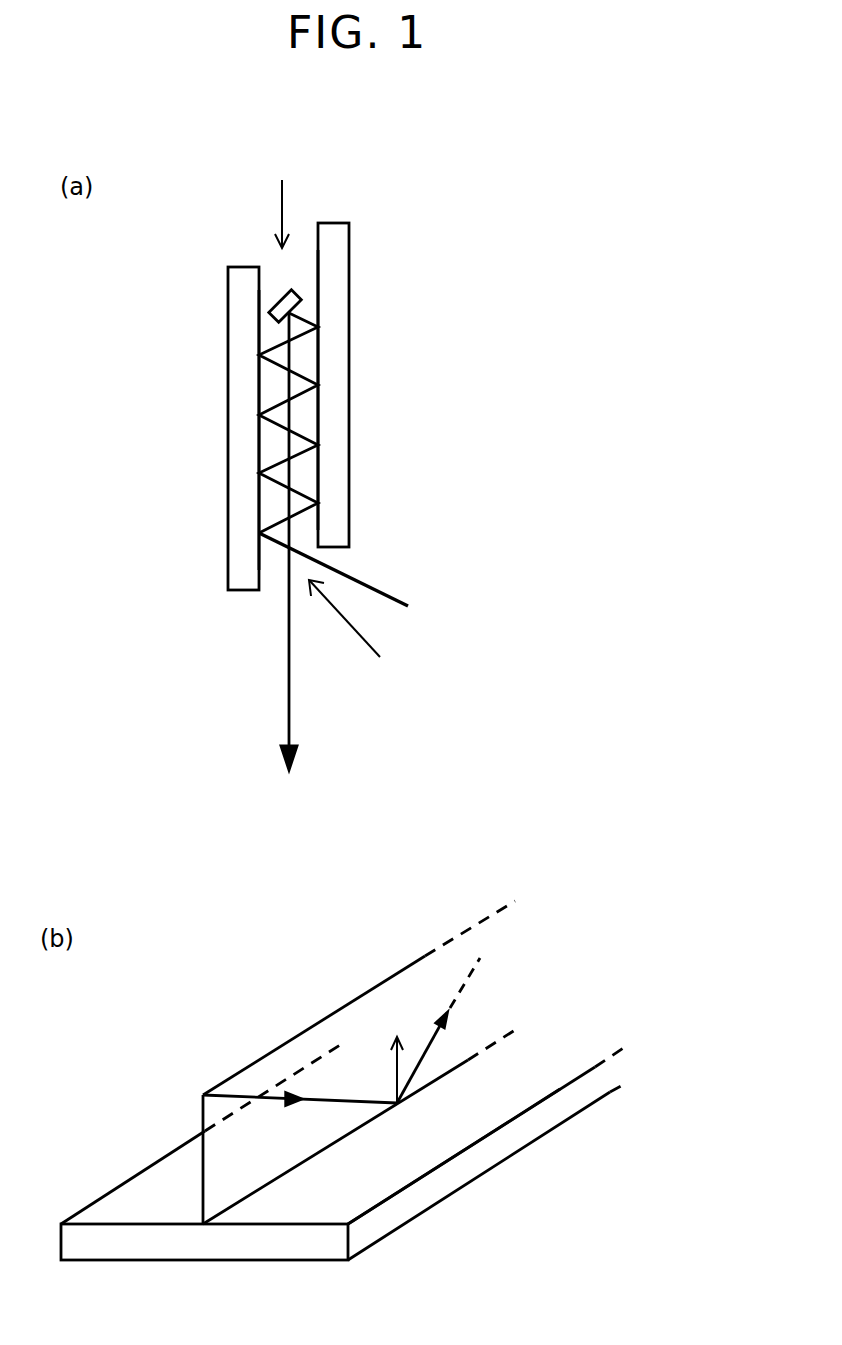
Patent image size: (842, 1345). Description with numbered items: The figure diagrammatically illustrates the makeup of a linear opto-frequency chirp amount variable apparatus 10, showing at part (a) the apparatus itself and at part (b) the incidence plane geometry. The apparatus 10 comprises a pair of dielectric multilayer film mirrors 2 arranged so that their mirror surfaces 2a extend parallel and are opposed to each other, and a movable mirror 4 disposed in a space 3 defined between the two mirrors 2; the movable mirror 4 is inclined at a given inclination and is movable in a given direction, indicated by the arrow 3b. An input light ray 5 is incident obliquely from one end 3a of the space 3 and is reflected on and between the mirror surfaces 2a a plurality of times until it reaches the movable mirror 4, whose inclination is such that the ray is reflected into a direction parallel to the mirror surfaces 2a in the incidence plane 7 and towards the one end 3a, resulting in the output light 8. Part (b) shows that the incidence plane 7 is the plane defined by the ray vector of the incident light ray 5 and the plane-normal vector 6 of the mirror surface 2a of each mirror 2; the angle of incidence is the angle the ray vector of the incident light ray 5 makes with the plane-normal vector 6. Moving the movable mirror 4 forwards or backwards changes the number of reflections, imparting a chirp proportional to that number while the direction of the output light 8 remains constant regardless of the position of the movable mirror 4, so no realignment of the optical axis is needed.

The linear opto-frequency chirp amount variable apparatus 10 is at (527, 219).
The dielectric multilayer film mirror 2 is at (242, 405).
The mirror surface 2a is at (320, 473).
The space 3 is at (282, 445).
The one end of the space 3a is at (369, 635).
The incident laser beam 3b is at (289, 196).
The movable mirror 4 is at (300, 297).
The input light ray 5 is at (367, 582).
The plane-normal vector 6 is at (395, 1067).
The incidence plane 7 is at (267, 1147).
The output light 8 is at (288, 637).